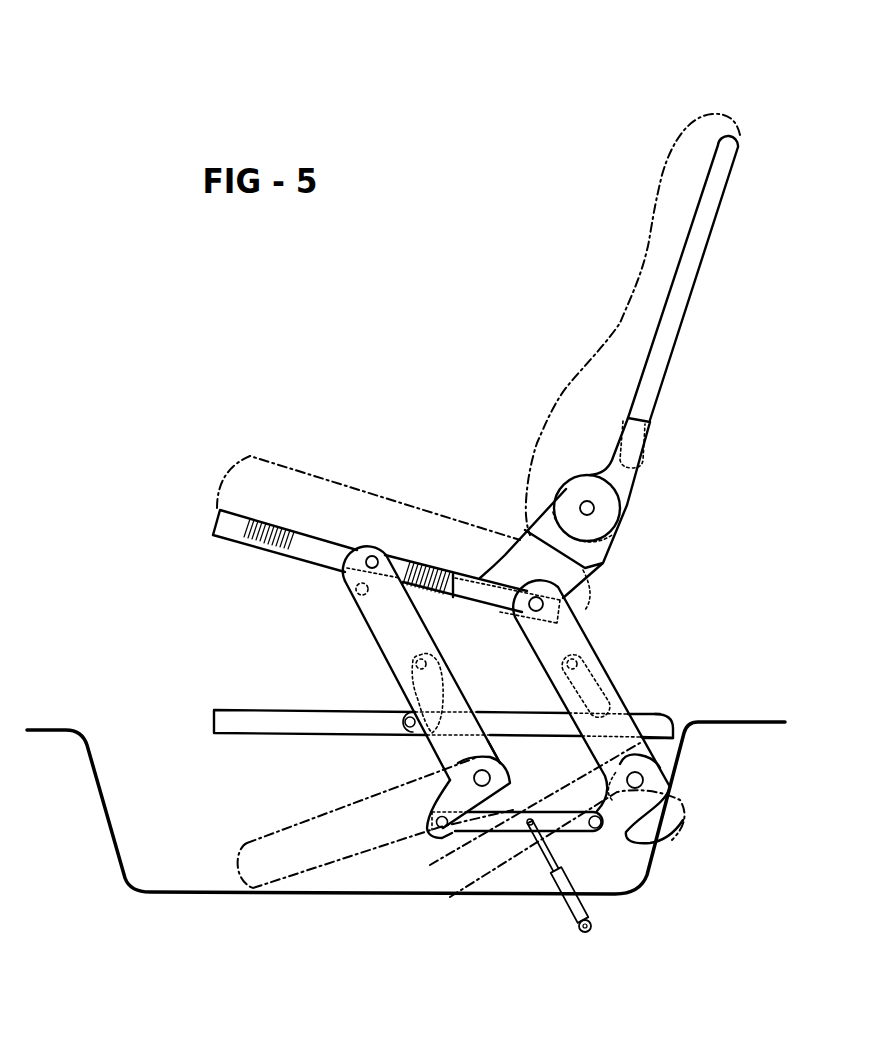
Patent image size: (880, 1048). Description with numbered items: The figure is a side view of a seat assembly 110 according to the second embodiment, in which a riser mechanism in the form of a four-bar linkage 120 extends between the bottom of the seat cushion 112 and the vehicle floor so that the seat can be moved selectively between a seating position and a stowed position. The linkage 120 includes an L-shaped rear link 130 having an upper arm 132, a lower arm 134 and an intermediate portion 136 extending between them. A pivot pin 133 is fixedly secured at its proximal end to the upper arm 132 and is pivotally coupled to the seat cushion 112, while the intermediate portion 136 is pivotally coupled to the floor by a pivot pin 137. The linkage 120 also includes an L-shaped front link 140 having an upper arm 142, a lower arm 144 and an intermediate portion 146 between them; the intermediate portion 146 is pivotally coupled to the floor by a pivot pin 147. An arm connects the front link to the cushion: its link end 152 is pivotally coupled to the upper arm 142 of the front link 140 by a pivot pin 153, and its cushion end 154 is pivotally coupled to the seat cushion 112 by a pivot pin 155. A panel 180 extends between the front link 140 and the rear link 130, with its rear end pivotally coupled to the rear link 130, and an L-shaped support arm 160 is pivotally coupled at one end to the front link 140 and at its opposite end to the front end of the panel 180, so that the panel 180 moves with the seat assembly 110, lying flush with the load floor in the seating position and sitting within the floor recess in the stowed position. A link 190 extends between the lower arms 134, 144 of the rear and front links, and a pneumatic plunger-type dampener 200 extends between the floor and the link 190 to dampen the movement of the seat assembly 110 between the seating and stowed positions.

The seat assembly 110 is at (370, 78).
The seat cushion 112 is at (236, 478).
The four-bar linkage 120 is at (706, 637).
The rear link 130 is at (606, 680).
The upper arm 132 is at (593, 644).
The pivot pin 133 is at (532, 597).
The lower arm 134 is at (650, 838).
The intermediate portion 136 is at (665, 712).
The pivot pin 137 is at (642, 778).
The front link 140 is at (443, 668).
The upper arm 142 is at (362, 628).
The lower arm 144 is at (430, 836).
The intermediate portion 146 is at (495, 745).
The pivot pin 147 is at (490, 779).
The link end 152 is at (352, 552).
The pivot pin 153 is at (372, 555).
The cushion end 154 is at (342, 593).
The pivot pin 155 is at (348, 598).
The support arm 160 is at (425, 698).
The panel 180 is at (231, 722).
The link 190 is at (472, 835).
The pneumatic plunger-type dampener 200 is at (590, 913).